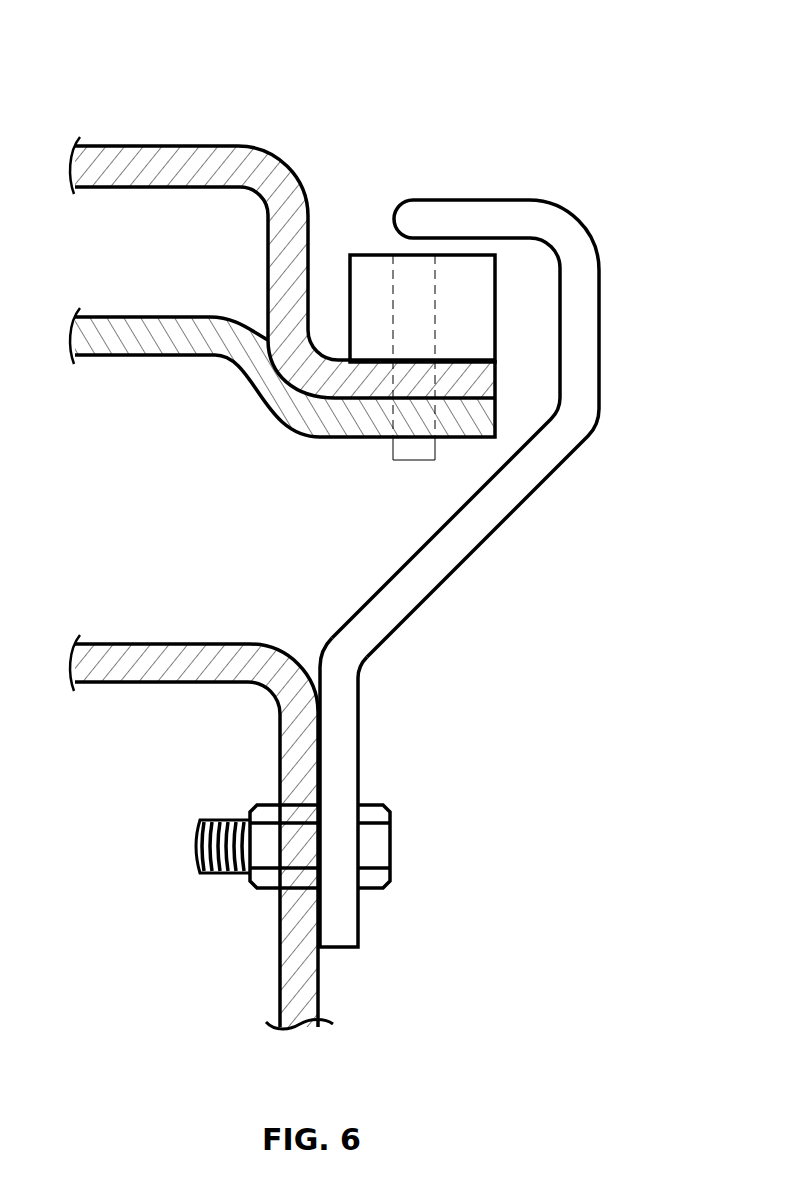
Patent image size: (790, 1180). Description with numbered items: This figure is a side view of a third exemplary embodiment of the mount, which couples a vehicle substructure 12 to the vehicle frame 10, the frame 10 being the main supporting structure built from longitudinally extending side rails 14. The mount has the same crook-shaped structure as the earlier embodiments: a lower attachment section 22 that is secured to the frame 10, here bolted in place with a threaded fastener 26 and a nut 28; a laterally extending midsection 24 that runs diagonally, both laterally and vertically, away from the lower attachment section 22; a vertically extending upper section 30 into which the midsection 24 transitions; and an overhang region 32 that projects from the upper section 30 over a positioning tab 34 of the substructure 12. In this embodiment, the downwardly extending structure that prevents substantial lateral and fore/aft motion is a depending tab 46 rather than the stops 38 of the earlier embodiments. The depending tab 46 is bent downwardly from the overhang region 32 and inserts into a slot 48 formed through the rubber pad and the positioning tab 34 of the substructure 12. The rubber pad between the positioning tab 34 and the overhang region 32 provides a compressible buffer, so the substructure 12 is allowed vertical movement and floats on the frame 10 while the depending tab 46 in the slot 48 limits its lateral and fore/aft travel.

The frame 10 is at (201, 800).
The substructure 12 is at (125, 146).
The side rail 14 is at (297, 750).
The lower attachment section 22 is at (358, 757).
The laterally extending midsection 24 is at (482, 547).
The threaded fastener 26 is at (392, 862).
The nut 28 is at (253, 805).
The vertically extending upper section 30 is at (599, 333).
The overhang region 32 is at (530, 200).
The positioning tab 34 is at (477, 383).
The stop 38 is at (495, 285).
The depending tab 46 is at (413, 303).
The slot 48 is at (435, 420).